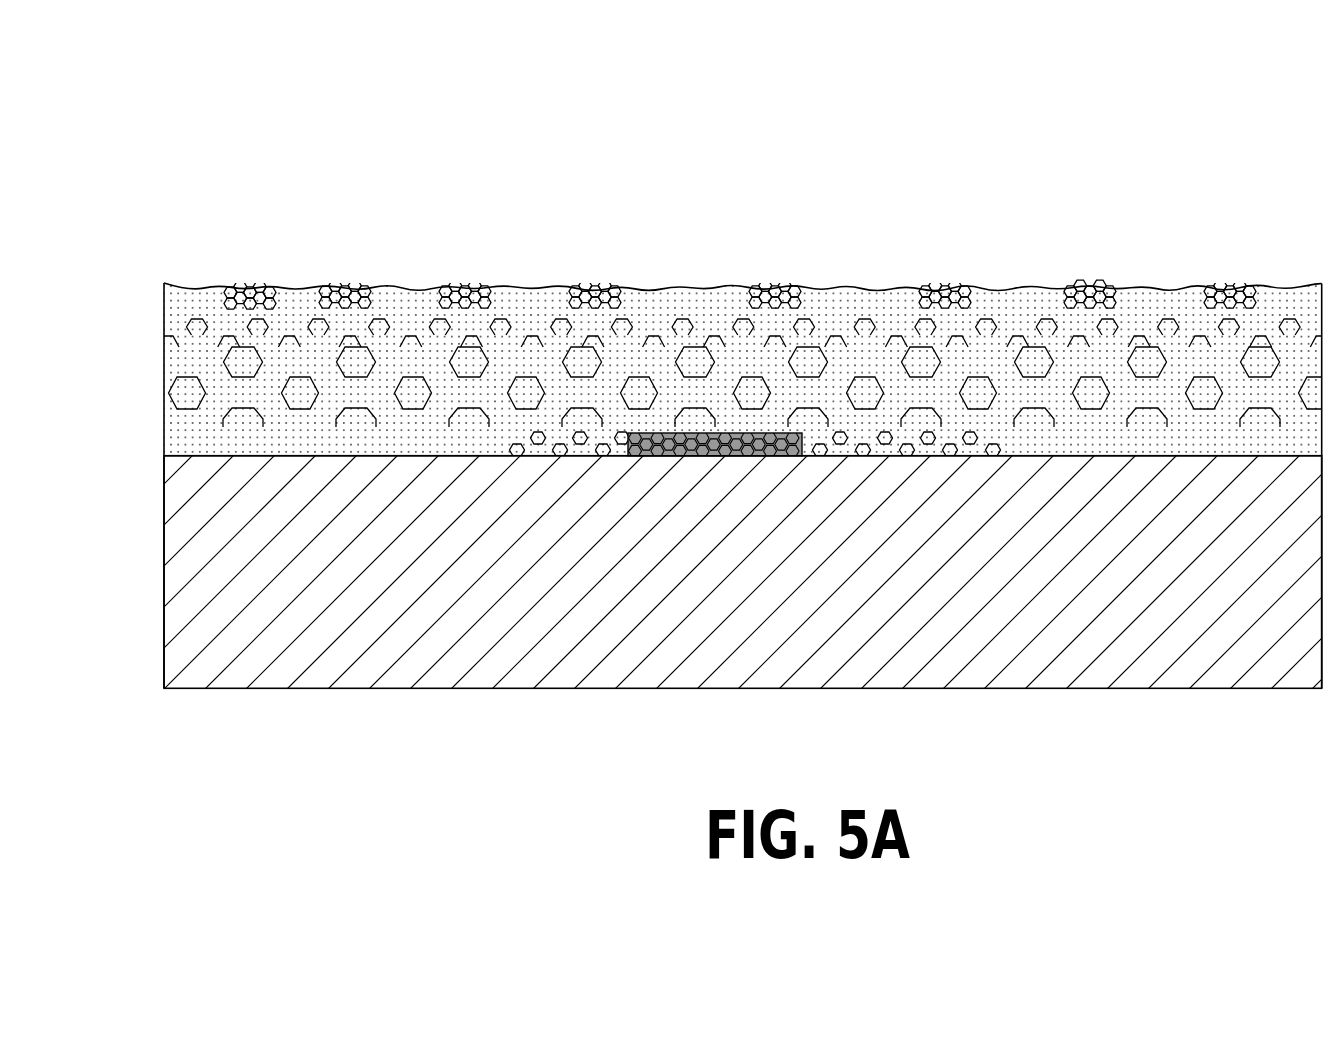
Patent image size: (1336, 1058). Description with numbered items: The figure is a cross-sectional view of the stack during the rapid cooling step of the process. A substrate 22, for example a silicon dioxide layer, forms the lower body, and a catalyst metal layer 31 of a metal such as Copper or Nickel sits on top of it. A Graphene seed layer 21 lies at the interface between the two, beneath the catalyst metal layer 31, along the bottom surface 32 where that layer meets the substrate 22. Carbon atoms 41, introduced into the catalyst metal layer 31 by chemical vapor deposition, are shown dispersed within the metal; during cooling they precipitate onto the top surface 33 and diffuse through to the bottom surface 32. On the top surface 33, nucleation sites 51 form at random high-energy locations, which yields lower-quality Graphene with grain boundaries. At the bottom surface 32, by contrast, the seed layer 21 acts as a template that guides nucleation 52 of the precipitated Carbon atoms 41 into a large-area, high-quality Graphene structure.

The Graphene seed layer 21 is at (722, 433).
The substrate 22 is at (429, 630).
The catalyst metal layer 31 is at (320, 370).
The bottom surface 32 is at (1177, 452).
The top surface 33 is at (410, 292).
The Carbon atoms 41 is at (968, 380).
The nucleation sites 51 is at (1097, 297).
The nucleation 52 is at (891, 441).